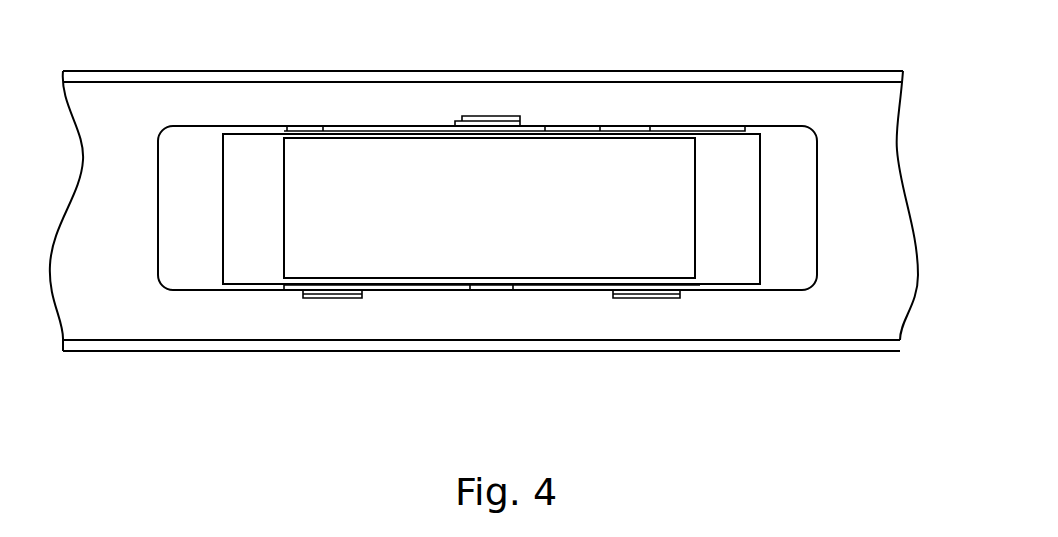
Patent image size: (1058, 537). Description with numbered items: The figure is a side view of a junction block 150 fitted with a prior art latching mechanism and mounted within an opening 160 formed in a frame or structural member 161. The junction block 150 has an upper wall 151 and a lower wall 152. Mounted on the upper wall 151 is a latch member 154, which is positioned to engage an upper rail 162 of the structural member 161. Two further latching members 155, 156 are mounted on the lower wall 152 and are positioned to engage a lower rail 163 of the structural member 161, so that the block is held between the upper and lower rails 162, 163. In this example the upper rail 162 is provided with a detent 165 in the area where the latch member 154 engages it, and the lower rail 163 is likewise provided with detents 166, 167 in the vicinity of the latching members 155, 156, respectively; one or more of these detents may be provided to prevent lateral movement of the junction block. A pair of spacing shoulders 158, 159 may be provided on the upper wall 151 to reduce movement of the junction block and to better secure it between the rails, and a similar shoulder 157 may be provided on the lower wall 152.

The junction block 150 is at (760, 186).
The upper wall 151 is at (600, 127).
The lower wall 152 is at (709, 285).
The latch member 154 is at (511, 118).
The latching member 155 is at (362, 296).
The latching member 156 is at (680, 298).
The shoulder 157 is at (488, 292).
The spacing shoulder 158 is at (313, 127).
The spacing shoulder 159 is at (683, 127).
The opening 160 is at (797, 268).
The structural member 161 is at (912, 304).
The upper rail 162 is at (785, 100).
The lower rail 163 is at (775, 328).
The detent 165 is at (528, 127).
The detent 166 is at (300, 292).
The detent 167 is at (612, 292).